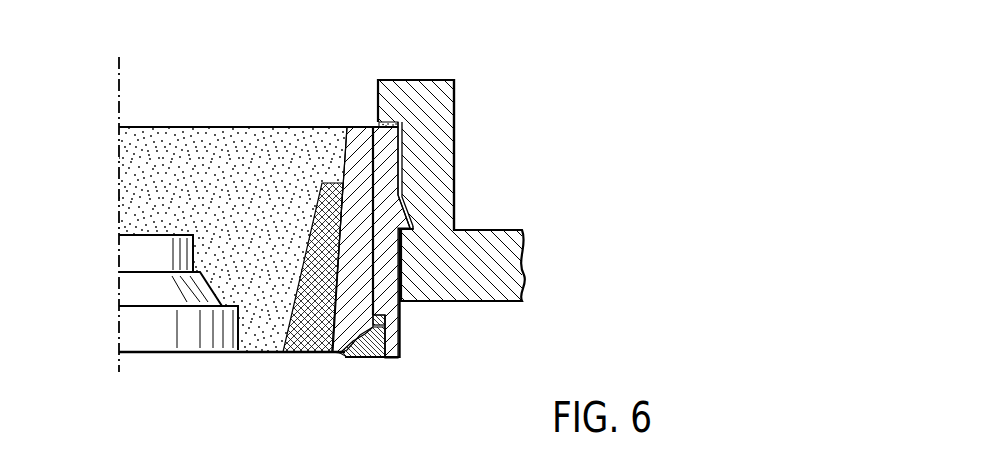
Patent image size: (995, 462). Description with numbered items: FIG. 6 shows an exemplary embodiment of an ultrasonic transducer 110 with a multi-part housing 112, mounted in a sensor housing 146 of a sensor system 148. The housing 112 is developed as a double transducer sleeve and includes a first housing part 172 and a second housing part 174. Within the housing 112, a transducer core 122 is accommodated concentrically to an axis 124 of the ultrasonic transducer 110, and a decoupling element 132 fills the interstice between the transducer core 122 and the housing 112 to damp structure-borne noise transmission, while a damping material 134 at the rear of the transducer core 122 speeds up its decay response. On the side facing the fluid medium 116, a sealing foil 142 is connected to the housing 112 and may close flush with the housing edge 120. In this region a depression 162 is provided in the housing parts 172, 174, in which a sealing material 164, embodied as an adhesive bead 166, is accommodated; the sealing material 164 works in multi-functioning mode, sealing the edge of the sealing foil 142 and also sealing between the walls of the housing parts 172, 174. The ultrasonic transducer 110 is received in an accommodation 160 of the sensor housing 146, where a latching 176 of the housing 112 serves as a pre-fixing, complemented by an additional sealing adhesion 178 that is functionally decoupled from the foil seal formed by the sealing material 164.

The ultrasonic transducer 110 is at (362, 76).
The housing 112 is at (452, 242).
The fluid medium 116 is at (186, 441).
The housing edge 120 is at (392, 368).
The transducer core 122 is at (103, 233).
The axis 124 is at (118, 95).
The decoupling element 132 is at (331, 182).
The damping material 134 is at (207, 143).
The sealing foil 142 is at (253, 360).
The sensor housing 146 is at (510, 280).
The sensor system 148 is at (492, 84).
The accommodation 160 is at (411, 192).
The depression 162 is at (390, 318).
The sealing material 164 is at (351, 385).
The adhesive bead 166 is at (378, 360).
The first housing part 172 is at (352, 142).
The second housing part 174 is at (385, 175).
The latching 176 is at (418, 238).
The sealing adhesion 178 is at (394, 122).